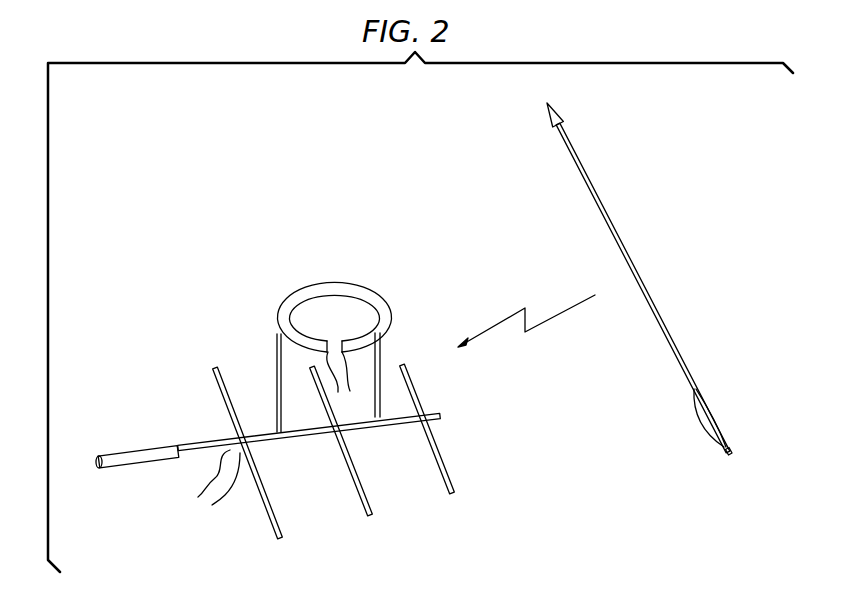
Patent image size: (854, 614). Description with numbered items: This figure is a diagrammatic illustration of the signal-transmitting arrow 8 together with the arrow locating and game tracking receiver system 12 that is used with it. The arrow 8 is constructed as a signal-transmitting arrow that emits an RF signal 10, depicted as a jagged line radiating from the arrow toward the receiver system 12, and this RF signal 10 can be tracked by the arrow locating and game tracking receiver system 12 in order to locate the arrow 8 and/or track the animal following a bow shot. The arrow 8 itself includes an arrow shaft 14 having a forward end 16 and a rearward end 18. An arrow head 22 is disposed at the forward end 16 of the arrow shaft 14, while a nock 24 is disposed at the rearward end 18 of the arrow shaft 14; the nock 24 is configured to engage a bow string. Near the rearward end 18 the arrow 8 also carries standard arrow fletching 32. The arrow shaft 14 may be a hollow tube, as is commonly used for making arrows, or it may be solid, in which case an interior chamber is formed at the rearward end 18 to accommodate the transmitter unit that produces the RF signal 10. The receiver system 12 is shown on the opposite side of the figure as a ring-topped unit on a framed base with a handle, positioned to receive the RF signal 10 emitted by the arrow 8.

The arrow 8 is at (636, 238).
The RF signal 10 is at (545, 322).
The arrow locating and game tracking receiver system 12 is at (242, 346).
The arrow shaft 14 is at (661, 322).
The forward end 16 is at (557, 122).
The rearward end 18 is at (723, 440).
The arrow head 22 is at (551, 117).
The nock 24 is at (727, 453).
The arrow fletching 32 is at (717, 417).